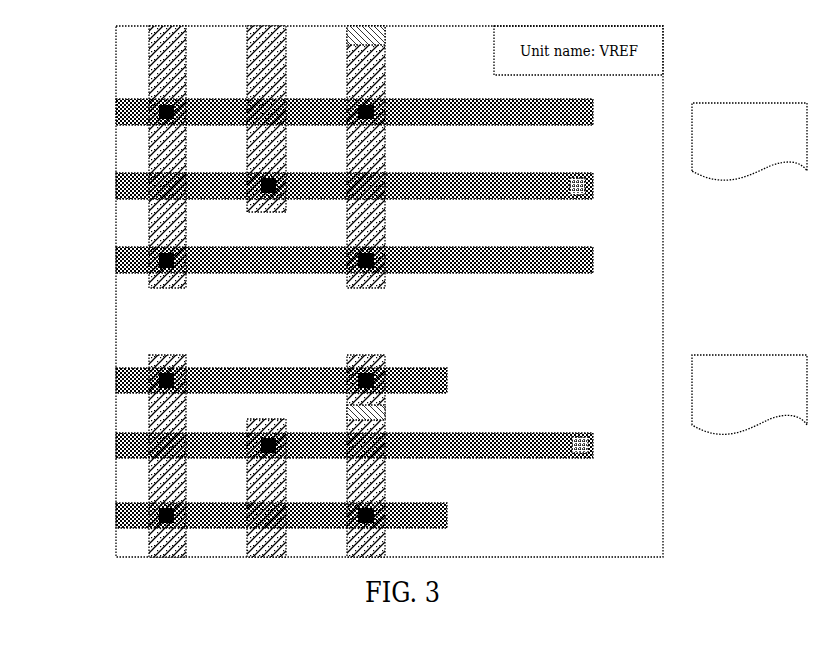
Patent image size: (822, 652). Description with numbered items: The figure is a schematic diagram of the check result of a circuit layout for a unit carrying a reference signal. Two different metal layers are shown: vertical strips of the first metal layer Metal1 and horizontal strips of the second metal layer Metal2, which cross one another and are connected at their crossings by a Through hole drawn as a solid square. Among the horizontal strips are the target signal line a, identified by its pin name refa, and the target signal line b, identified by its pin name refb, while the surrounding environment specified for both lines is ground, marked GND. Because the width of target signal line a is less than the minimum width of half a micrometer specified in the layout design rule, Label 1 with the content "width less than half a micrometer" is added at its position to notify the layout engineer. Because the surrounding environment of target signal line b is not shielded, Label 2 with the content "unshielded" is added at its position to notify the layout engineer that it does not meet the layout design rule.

The metal layer Metal1 is at (168, 63).
The metal layer Metal2 is at (130, 113).
The through hole Through hole is at (167, 260).
The ground GND is at (385, 40).
The target signal line a refa is at (586, 187).
The target signal line b refb is at (590, 445).
The label 1 Label 1 is at (593, 175).
The label 2 Label 2 is at (593, 433).